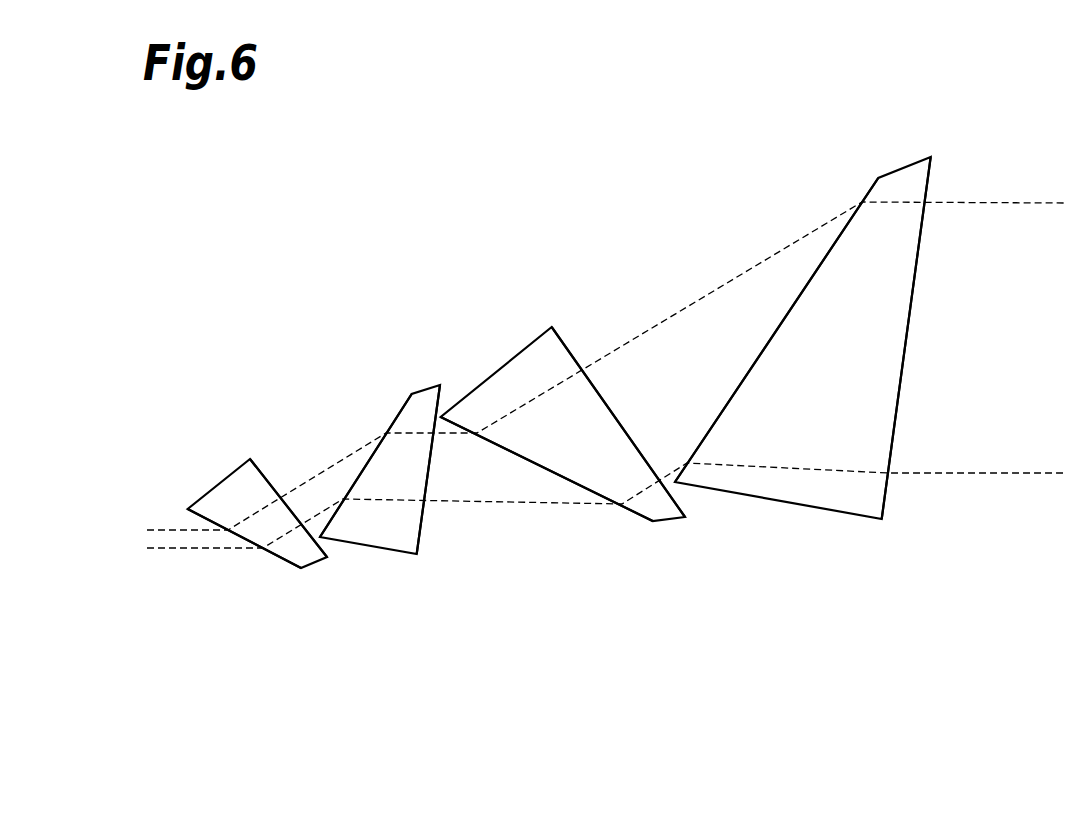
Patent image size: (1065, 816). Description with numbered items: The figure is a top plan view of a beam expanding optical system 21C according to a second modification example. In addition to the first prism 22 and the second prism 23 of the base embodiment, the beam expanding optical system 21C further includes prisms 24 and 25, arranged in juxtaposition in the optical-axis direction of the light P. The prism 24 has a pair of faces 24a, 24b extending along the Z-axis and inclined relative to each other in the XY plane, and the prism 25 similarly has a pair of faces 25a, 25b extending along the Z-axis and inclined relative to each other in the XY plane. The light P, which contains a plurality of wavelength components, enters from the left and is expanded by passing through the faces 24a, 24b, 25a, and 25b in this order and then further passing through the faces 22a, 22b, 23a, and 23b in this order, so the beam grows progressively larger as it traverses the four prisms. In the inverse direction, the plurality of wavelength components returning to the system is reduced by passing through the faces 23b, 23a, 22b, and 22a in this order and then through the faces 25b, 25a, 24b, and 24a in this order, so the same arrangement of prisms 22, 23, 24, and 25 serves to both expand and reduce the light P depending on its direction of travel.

The beam expanding optical system 21C is at (752, 680).
The first prism 22 is at (627, 524).
The face of first prism 22a is at (520, 458).
The face of first prism 22b is at (622, 424).
The second prism 23 is at (764, 512).
The face of second prism 23a is at (757, 357).
The face of second prism 23b is at (910, 317).
The prism 24 is at (280, 576).
The face of prism 24a is at (242, 540).
The face of prism 24b is at (267, 476).
The prism 25 is at (383, 563).
The face of prism 25a is at (361, 470).
The face of prism 25b is at (422, 531).
The light P is at (173, 549).